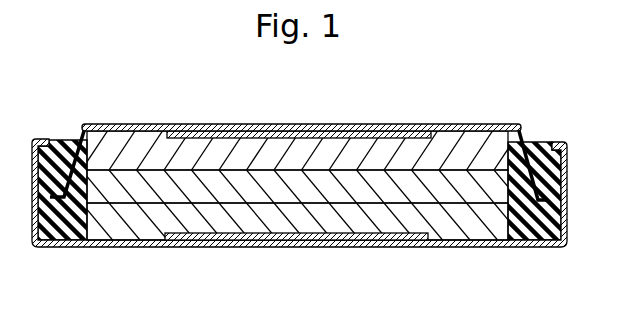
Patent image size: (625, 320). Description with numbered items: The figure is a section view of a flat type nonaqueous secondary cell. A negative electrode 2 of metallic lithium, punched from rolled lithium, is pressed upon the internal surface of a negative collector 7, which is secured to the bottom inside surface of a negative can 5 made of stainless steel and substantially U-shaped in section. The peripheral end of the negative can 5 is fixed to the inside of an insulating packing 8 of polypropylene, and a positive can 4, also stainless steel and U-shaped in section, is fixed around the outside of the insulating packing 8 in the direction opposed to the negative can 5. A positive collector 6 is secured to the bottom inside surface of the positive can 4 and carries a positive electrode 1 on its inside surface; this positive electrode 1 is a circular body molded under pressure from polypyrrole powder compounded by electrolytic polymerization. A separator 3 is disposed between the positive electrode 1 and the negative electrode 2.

The positive electrode 1 is at (201, 216).
The negative electrode 2 is at (277, 150).
The separator 3 is at (115, 188).
The positive can 4 is at (507, 247).
The negative can 5 is at (107, 121).
The positive collector 6 is at (385, 247).
The negative collector 7 is at (378, 134).
The insulating packing 8 is at (557, 170).